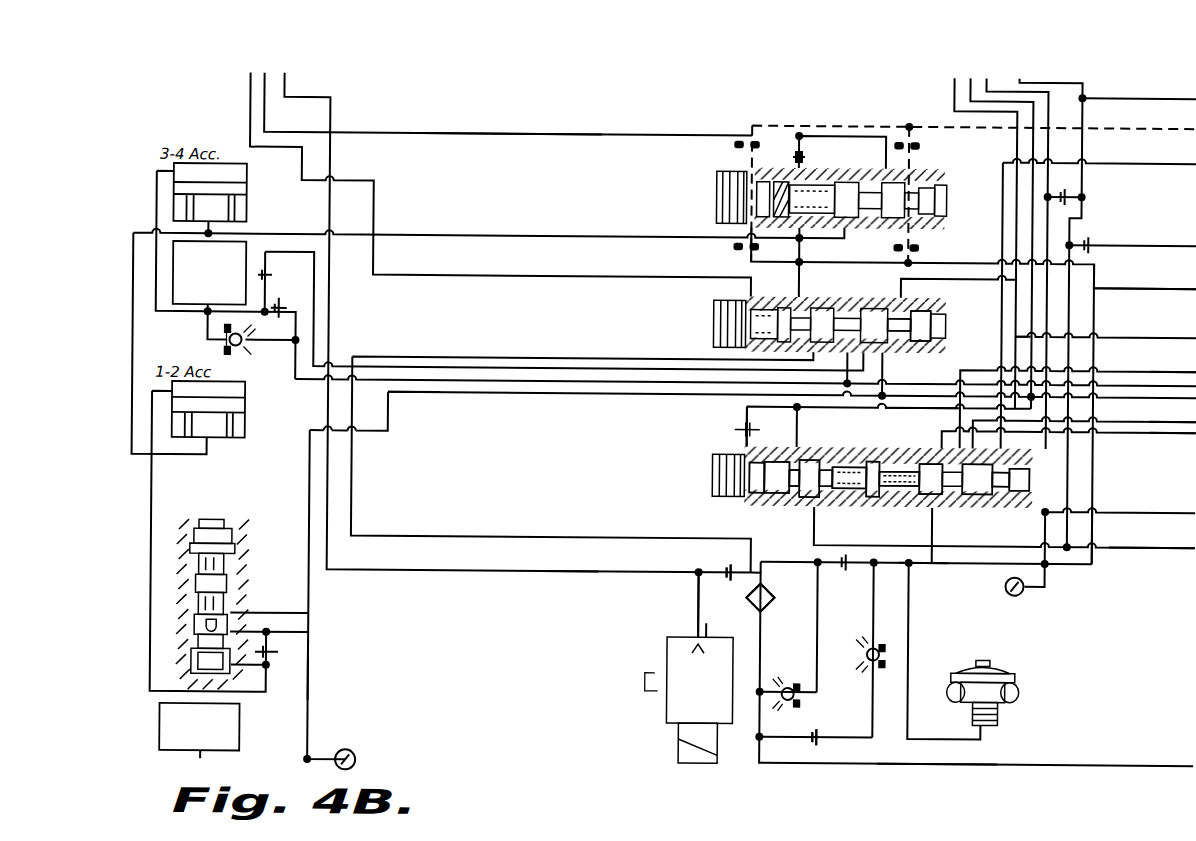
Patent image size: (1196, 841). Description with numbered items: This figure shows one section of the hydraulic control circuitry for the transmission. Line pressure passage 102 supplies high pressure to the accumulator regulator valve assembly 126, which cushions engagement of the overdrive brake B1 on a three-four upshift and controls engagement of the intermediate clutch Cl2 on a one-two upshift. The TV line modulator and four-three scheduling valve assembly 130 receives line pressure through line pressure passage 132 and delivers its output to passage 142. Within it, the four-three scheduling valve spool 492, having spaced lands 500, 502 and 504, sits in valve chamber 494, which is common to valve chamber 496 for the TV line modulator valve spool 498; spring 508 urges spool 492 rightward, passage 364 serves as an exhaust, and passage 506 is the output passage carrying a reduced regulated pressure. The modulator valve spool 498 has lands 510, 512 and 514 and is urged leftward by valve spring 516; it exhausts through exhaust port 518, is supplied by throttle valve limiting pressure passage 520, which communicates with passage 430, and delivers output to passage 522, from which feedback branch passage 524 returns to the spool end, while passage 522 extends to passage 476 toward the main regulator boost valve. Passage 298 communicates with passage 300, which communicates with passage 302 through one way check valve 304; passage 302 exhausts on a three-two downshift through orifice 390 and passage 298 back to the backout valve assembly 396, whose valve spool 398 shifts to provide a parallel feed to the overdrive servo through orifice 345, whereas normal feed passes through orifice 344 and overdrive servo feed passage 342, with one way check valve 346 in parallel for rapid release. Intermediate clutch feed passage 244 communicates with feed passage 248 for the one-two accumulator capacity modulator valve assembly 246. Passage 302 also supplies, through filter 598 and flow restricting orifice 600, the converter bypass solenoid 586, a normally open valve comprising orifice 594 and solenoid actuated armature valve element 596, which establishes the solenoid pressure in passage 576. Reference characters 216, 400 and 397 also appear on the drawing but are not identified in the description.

The line pressure passage 102 is at (520, 131).
The accumulator regulator valve assembly 126 is at (714, 177).
The passage 216 is at (1127, 102).
The spring 508 is at (873, 501).
The passage 298 is at (1150, 285).
The backout valve assembly 396 is at (837, 304).
The passage 476 is at (1015, 331).
The backout valve land 400 is at (905, 342).
The backout valve spool 398 is at (897, 340).
The output pressure passage 506 is at (1180, 366).
The orifice 344 is at (284, 306).
The orifice 345 is at (258, 248).
The overdrive servo feed passage 342 is at (214, 313).
The one way check valve 346 is at (245, 352).
The intermediate clutch feed passage 244 is at (462, 396).
The feedback branch passage 524 is at (745, 417).
The TV line modulator valve spool 498 is at (760, 426).
The valve land 512 is at (809, 457).
The valve spring 516 is at (846, 462).
The output pressure passage 522 is at (885, 405).
The TV line modulator and 4-3 scheduling valve assembly 130 is at (887, 456).
The valve land 502 is at (990, 470).
The exhaust passage 364 is at (1133, 423).
The line pressure passage 132 is at (1118, 433).
The valve land 510 is at (715, 466).
The valve chamber 496 is at (715, 479).
The exhaust port 518 is at (776, 500).
The valve land 514 is at (811, 504).
The valve chamber 494 is at (905, 504).
The valve land 500 is at (923, 504).
The 4-3 scheduling valve spool 492 is at (988, 501).
The valve land 504 is at (1013, 504).
The passage 300 is at (1096, 529).
The flow restricting orifice 600 is at (727, 569).
The solenoid pressure passage 576 is at (552, 578).
The solenoid orifice 594 is at (697, 628).
The solenoid actuated armature valve element 596 is at (690, 650).
The filter 598 is at (764, 600).
The one way check valve 304 is at (790, 681).
The converter bypass solenoid 586 is at (668, 716).
The orifice 390 is at (819, 731).
The passage 302 is at (841, 763).
The throttle valve limiting pressure passage 520 is at (930, 558).
The passage 142 is at (994, 596).
The shuttle valve 397 is at (882, 650).
The passage 430 is at (1143, 550).
The 1-2 accumulator capacity modulator valve assembly 246 is at (241, 568).
The feed passage 248 is at (311, 698).
The overdrive brake B1 is at (170, 257).
The intermediate clutch Cl2 is at (160, 719).